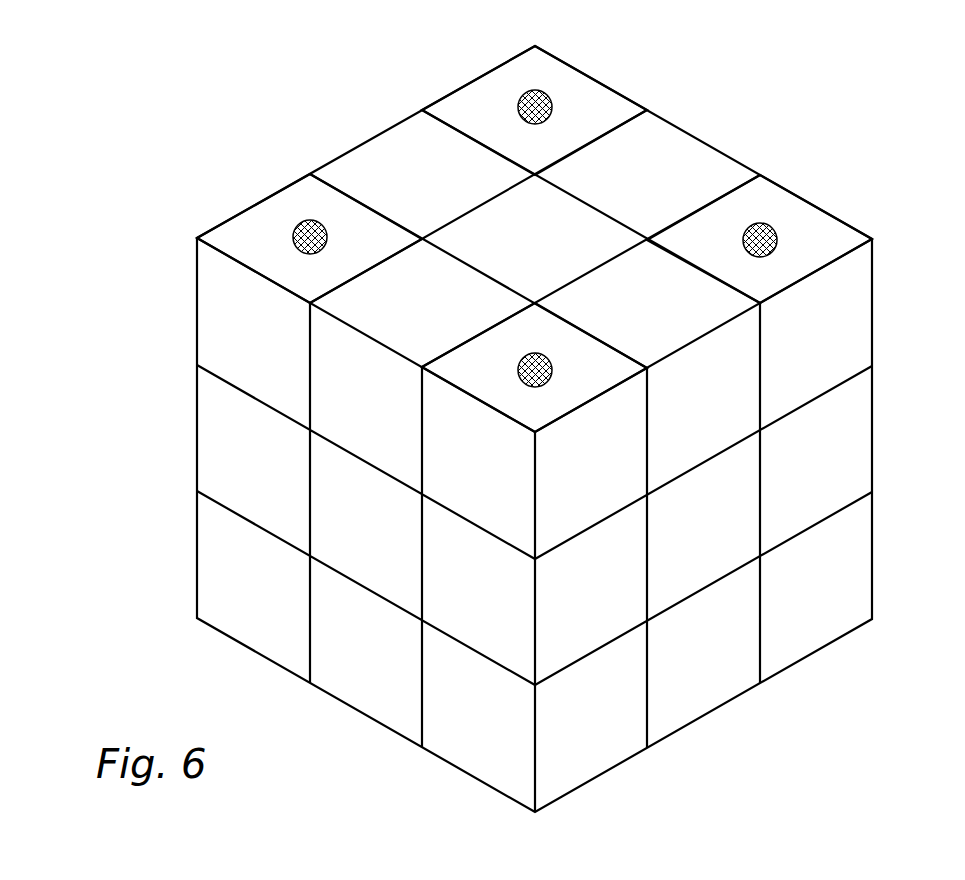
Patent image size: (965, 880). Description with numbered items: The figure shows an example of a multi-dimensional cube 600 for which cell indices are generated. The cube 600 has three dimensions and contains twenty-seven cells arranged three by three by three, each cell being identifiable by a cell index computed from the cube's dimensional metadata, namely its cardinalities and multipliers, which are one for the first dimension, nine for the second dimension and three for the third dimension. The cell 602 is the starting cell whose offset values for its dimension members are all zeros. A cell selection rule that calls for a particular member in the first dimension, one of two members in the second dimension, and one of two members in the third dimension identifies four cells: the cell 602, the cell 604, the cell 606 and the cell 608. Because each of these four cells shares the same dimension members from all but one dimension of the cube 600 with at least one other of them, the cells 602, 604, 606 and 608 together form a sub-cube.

The multi-dimensional cube 600 is at (203, 110).
The cell 602 is at (575, 378).
The cell 604 is at (815, 232).
The cell 606 is at (265, 222).
The cell 608 is at (590, 104).